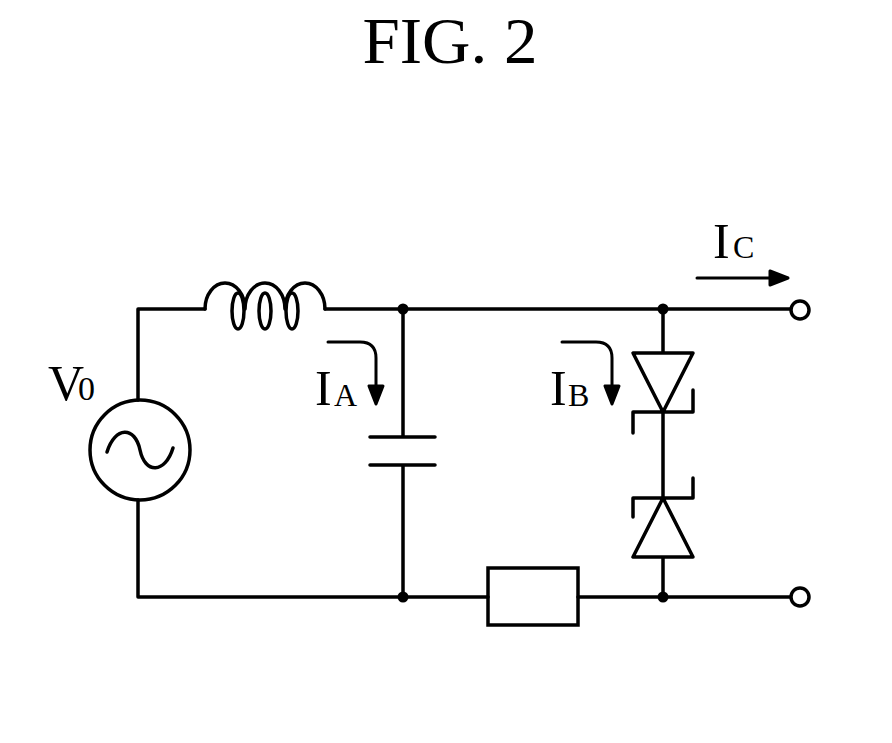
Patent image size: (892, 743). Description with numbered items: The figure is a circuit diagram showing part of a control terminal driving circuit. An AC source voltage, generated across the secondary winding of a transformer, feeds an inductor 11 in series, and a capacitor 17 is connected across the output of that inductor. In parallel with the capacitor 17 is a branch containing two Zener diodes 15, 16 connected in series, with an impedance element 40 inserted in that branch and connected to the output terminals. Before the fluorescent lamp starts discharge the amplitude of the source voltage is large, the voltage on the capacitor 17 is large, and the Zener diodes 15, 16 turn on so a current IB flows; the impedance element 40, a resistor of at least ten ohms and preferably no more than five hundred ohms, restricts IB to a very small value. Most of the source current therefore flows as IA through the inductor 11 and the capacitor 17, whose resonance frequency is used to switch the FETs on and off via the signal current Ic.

The inductor 11 is at (262, 280).
The capacitor 17 is at (358, 453).
The Zener diode 15 is at (700, 383).
The Zener diode 16 is at (700, 525).
The impedance element 40 is at (533, 625).